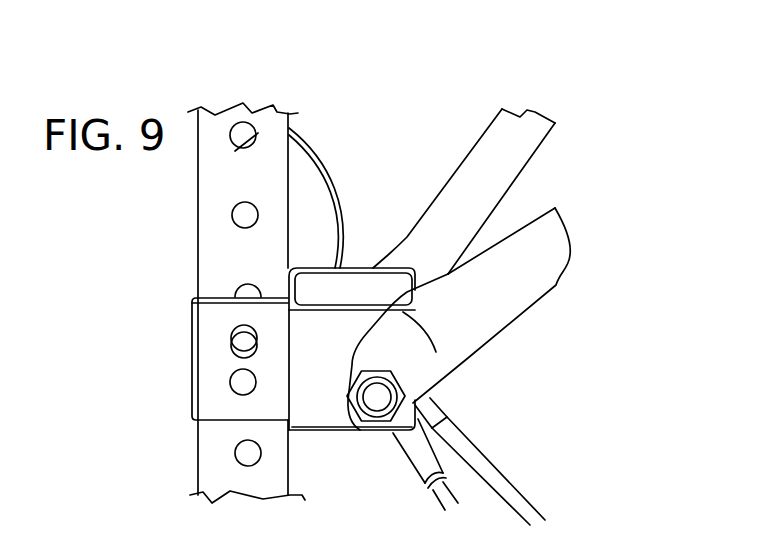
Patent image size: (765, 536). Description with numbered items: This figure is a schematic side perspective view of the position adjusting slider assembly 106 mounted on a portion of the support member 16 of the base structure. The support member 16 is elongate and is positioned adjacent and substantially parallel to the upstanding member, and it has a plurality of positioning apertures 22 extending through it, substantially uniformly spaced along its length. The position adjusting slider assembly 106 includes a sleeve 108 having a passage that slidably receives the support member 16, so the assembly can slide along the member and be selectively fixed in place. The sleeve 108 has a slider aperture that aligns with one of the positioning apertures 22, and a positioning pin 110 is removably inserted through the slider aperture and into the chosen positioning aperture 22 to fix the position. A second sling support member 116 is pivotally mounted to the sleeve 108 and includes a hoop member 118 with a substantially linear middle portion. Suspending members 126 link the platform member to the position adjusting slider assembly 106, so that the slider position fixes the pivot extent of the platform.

The support member 16 is at (282, 123).
The positioning apertures 22 is at (256, 128).
The position adjusting slider assembly 106 is at (297, 432).
The sleeve 108 is at (192, 308).
The positioning pin 110 is at (245, 343).
The second sling support member 116 is at (453, 323).
The hoop member 118 is at (507, 287).
The suspending members 126 is at (493, 475).